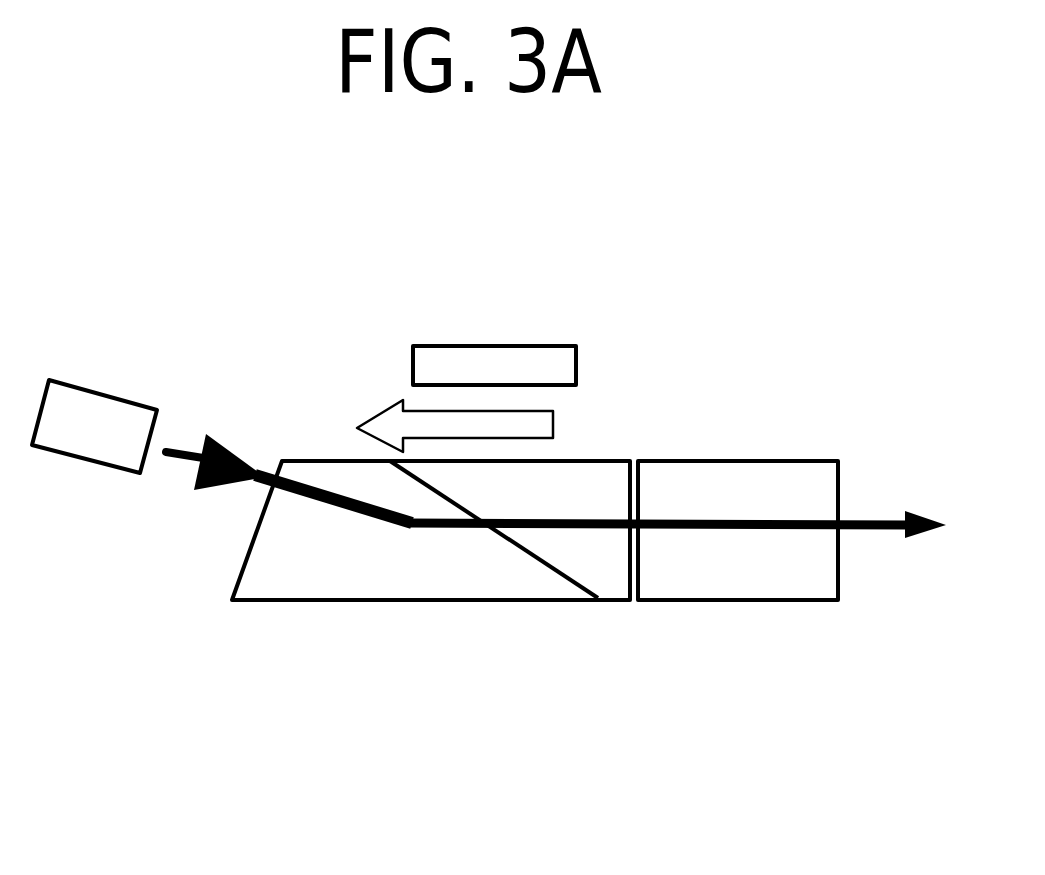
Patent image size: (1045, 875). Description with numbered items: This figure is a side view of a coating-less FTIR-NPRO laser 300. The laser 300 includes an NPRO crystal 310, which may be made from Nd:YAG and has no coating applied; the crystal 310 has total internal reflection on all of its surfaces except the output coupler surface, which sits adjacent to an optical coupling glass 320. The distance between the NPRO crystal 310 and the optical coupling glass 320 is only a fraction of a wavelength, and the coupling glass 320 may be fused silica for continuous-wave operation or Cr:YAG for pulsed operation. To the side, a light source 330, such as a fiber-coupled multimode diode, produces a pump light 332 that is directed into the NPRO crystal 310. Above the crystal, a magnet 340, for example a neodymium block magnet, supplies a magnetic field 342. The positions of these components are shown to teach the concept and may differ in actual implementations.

The coating-less FTIR-NPRO laser 300 is at (126, 128).
The NPRO crystal 310 is at (355, 602).
The optical coupling glass 320 is at (750, 577).
The light source 330 is at (107, 393).
The pump light 332 is at (192, 470).
The magnet 340 is at (503, 345).
The magnetic field 342 is at (497, 430).